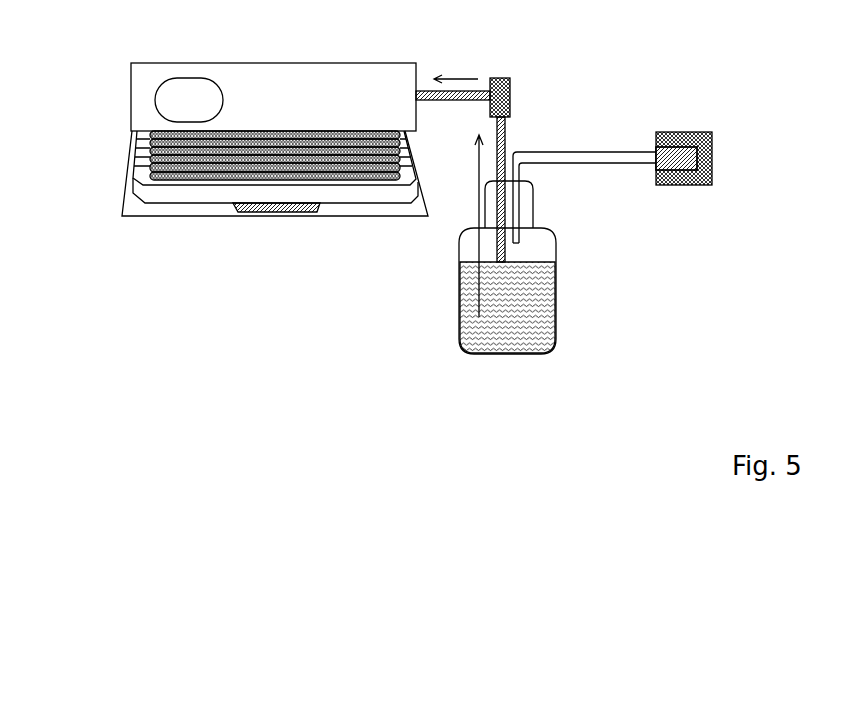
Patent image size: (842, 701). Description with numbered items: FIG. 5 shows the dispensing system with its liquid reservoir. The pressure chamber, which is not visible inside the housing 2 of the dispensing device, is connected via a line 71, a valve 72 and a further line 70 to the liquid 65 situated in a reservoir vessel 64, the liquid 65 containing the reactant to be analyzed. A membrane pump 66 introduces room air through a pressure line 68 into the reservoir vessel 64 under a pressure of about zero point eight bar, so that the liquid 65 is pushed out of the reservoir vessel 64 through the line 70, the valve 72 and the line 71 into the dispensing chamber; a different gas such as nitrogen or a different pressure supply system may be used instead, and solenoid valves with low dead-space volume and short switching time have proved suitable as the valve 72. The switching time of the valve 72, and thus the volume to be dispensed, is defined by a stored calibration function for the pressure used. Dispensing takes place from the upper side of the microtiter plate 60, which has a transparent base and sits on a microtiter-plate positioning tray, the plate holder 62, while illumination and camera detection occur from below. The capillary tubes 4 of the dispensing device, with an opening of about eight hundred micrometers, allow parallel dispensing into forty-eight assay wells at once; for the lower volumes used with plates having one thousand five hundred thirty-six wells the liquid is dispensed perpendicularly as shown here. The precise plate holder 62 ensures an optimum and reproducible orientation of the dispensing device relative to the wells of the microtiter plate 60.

The housing 2 is at (295, 82).
The tube 4 is at (162, 132).
The microtiter plate 60 is at (353, 168).
The plate holder 62 is at (168, 208).
The reservoir vessel 64 is at (556, 317).
The liquid 65 is at (472, 330).
The pump 66 is at (712, 169).
The pressure line 68 is at (602, 160).
The line 70 is at (507, 133).
The line 71 is at (428, 90).
The valve 72 is at (512, 82).